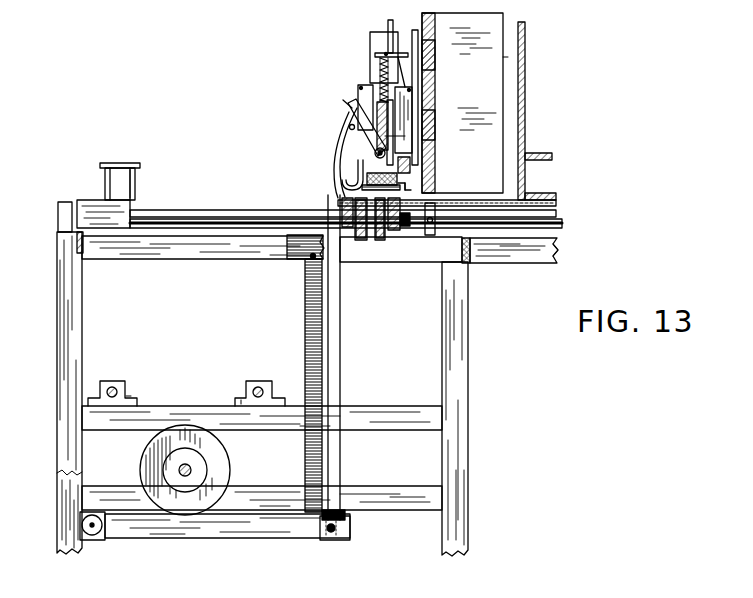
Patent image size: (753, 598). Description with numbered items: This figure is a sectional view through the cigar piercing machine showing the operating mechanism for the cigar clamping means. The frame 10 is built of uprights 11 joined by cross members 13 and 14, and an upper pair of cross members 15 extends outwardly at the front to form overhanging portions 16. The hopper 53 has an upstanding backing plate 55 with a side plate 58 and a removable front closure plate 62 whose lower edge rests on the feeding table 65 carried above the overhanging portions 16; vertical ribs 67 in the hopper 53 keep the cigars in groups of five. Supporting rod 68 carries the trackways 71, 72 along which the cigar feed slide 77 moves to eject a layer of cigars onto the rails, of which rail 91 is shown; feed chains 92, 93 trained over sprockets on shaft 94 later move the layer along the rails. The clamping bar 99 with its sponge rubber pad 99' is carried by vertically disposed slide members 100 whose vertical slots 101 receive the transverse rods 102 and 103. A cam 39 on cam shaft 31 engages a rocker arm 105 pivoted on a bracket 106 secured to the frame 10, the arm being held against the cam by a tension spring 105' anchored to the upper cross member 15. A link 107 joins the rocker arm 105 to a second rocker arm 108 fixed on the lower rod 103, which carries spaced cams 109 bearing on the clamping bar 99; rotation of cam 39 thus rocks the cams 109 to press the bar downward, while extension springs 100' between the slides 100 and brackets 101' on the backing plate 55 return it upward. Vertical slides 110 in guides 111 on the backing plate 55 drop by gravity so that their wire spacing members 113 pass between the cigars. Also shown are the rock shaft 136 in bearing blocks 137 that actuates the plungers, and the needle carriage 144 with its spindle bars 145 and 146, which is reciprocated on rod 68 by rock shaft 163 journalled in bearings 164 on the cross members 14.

The frame 10 is at (57, 246).
The uprights 11 is at (57, 318).
The cross members 13 is at (425, 498).
The cross members 14 is at (414, 418).
The upper cross members 15 is at (141, 259).
The overhanging portions 16 is at (540, 252).
The cam shaft 31 is at (192, 472).
The cam 39 is at (148, 460).
The hopper 53 is at (505, 55).
The backing plate 55 is at (434, 58).
The side plate 58 is at (504, 82).
The front closure plate 62 is at (527, 118).
The feeding table 65 is at (548, 157).
The vertical ribs 67 is at (434, 125).
The supporting rod 68 is at (563, 227).
The trackway 71 is at (506, 244).
The trackway 72 is at (560, 214).
The cigar feed slide 77 is at (548, 196).
The rail 91 is at (338, 205).
The feed chain 92 is at (380, 241).
The feed chain 93 is at (358, 241).
The shaft 94 is at (406, 227).
The clamping bar 99 is at (420, 172).
The pad 99' is at (347, 187).
The slide members 100 is at (430, 128).
The extension springs 100' is at (365, 77).
The vertical slots 101 is at (429, 154).
The brackets 101' is at (374, 32).
The rod 102 is at (379, 110).
The rod 103 is at (374, 152).
The rocker arm 105 is at (227, 542).
The tension spring 105' is at (293, 373).
The bracket 106 is at (90, 543).
The link 107 is at (341, 368).
The second rocker arm 108 is at (341, 121).
The cams 109 is at (352, 170).
The vertical slides 110 is at (375, 43).
The guides 111 is at (407, 100).
The spacing members 113 is at (412, 187).
The rock shaft 136 is at (261, 387).
The bearing blocks 137 is at (240, 403).
The carriage 144 is at (100, 222).
The bar 145 is at (105, 176).
The bar 146 is at (135, 176).
The rock shaft 163 is at (122, 391).
The bearings 164 is at (132, 404).